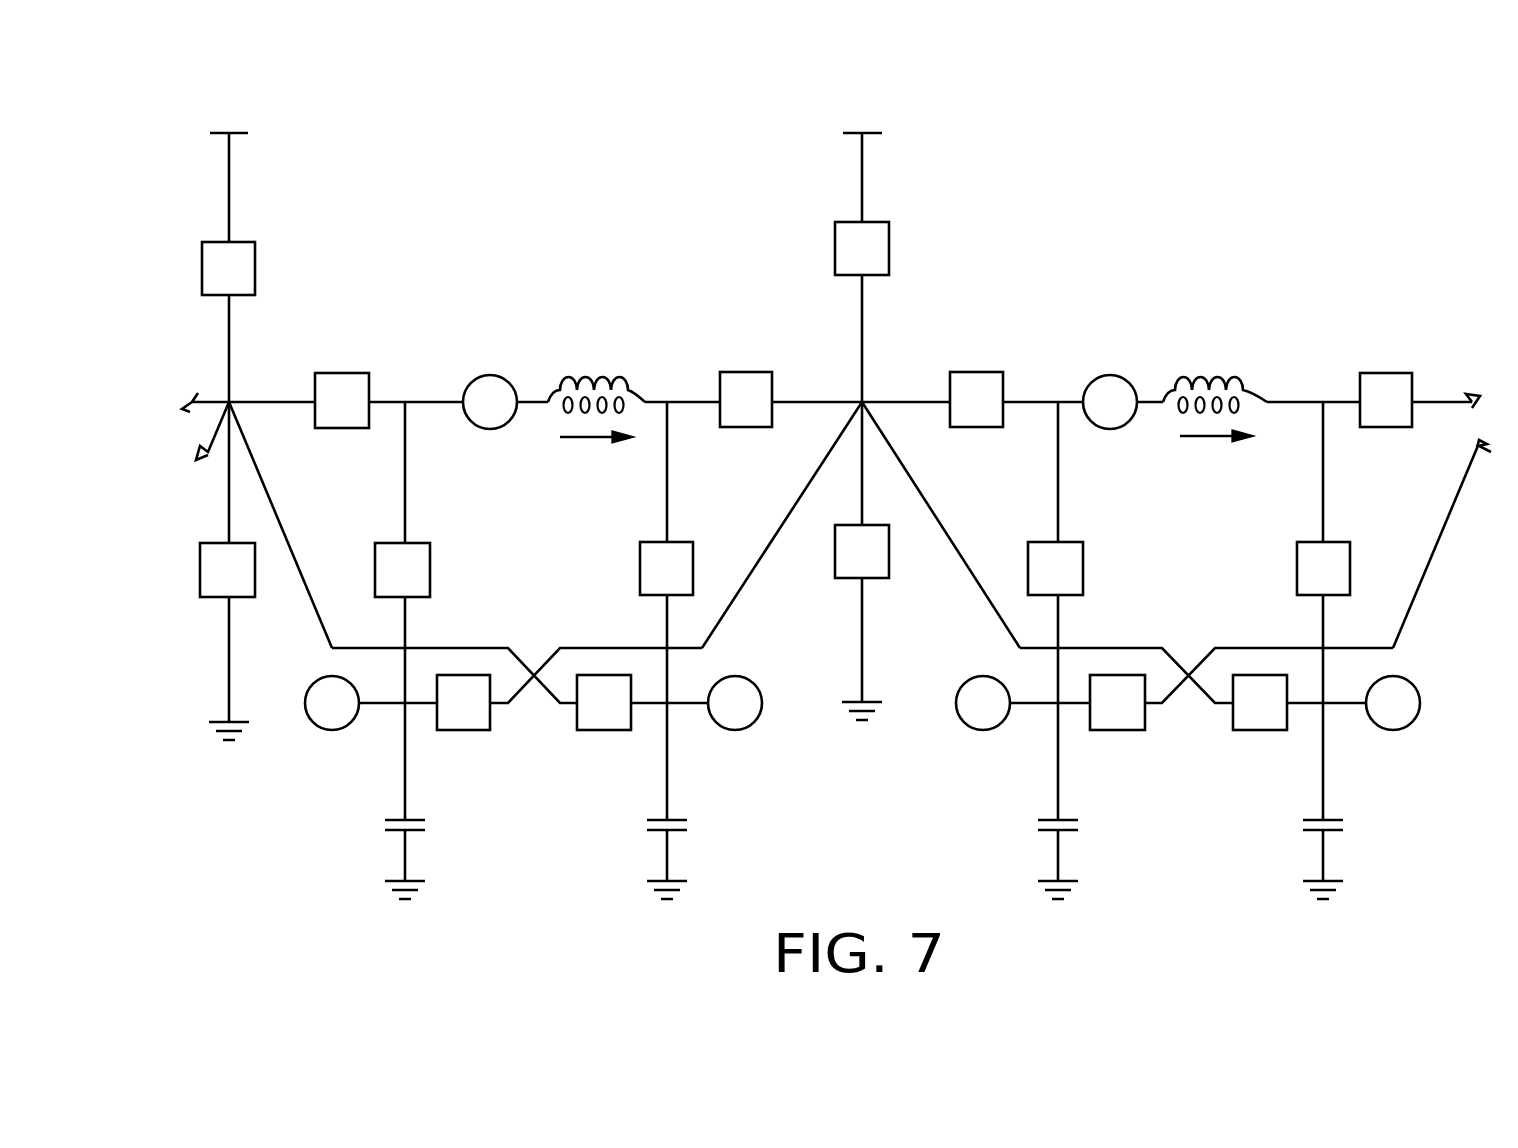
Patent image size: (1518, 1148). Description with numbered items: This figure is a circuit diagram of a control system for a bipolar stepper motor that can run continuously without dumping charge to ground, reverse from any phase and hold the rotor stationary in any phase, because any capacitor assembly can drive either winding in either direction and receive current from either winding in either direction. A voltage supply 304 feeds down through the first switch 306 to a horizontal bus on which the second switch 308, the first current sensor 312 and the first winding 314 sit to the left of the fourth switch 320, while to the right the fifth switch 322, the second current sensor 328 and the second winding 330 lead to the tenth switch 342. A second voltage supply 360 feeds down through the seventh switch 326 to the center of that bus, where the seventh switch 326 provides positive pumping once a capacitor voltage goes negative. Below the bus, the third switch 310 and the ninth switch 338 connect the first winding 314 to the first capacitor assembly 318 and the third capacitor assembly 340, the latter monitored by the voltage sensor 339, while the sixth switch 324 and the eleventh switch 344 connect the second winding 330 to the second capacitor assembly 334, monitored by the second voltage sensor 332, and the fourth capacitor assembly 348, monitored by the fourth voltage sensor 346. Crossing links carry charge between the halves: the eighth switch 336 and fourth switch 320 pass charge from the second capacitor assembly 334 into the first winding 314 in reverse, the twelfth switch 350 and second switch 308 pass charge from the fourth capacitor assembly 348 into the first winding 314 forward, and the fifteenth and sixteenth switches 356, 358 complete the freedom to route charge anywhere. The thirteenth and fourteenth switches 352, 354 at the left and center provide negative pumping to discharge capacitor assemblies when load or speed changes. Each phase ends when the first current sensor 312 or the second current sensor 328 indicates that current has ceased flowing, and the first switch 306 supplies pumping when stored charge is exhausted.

The voltage supply 304 is at (247, 135).
The first switch 306 is at (255, 268).
The second switch 308 is at (345, 372).
The first current sensor 312 is at (490, 375).
The first winding 314 is at (640, 394).
The fourth switch 320 is at (740, 372).
The voltage supply 360 is at (880, 115).
The seventh switch 326 is at (889, 245).
The fifth switch 322 is at (975, 372).
The second current sensor 328 is at (1103, 375).
The second winding 330 is at (1262, 393).
The tenth switch 342 is at (1380, 373).
The sixth switch 324 is at (1350, 563).
The eleventh switch 344 is at (1083, 562).
The ninth switch 338 is at (430, 570).
The third switch 310 is at (640, 568).
The fourteenth switch 354 is at (835, 560).
The thirteenth switch 352 is at (200, 570).
The voltage sensor 339 is at (336, 730).
The fifteenth switch 356 is at (455, 730).
The sixteenth switch 358 is at (605, 730).
The third capacitor assembly 340 is at (382, 820).
The first capacitor assembly 318 is at (647, 828).
The fourth voltage sensor 346 is at (957, 706).
The twelfth switch 350 is at (1118, 730).
The eighth switch 336 is at (1260, 730).
The second voltage sensor 332 is at (1395, 730).
The fourth capacitor assembly 348 is at (1038, 820).
The second capacitor assembly 334 is at (1343, 828).